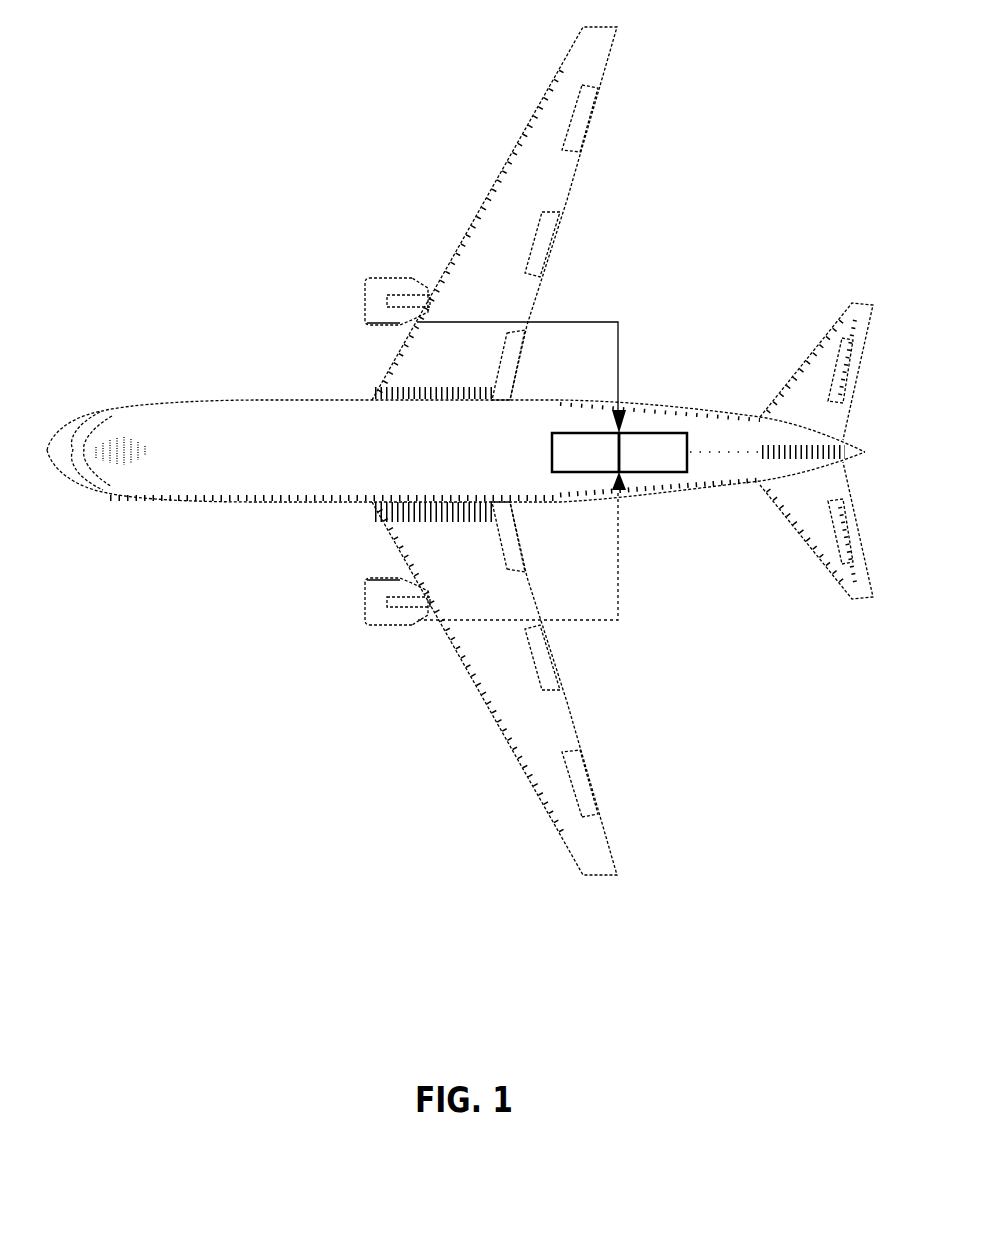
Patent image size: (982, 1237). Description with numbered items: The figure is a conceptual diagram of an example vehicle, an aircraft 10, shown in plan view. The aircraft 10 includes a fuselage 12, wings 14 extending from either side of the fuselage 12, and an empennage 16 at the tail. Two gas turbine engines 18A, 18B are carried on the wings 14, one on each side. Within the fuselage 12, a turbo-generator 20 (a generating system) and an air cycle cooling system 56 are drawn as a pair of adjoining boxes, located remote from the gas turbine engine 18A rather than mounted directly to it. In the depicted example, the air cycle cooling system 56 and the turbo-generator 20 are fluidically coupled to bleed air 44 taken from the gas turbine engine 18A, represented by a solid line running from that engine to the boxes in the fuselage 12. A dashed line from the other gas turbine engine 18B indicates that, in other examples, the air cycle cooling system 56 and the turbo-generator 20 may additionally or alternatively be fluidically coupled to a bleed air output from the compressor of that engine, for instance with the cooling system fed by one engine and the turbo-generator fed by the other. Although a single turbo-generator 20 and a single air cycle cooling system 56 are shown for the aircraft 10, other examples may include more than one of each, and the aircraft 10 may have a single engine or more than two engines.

The aircraft 10 is at (226, 159).
The fuselage 12 is at (470, 464).
The wings 14 is at (490, 315).
The empennage 16 is at (722, 535).
The gas turbine engine 18A is at (384, 276).
The gas turbine engine 18B is at (384, 627).
The turbo-generator 20 is at (585, 452).
The air cycle cooling system 56 is at (653, 452).
The bleed air 44 is at (565, 322).